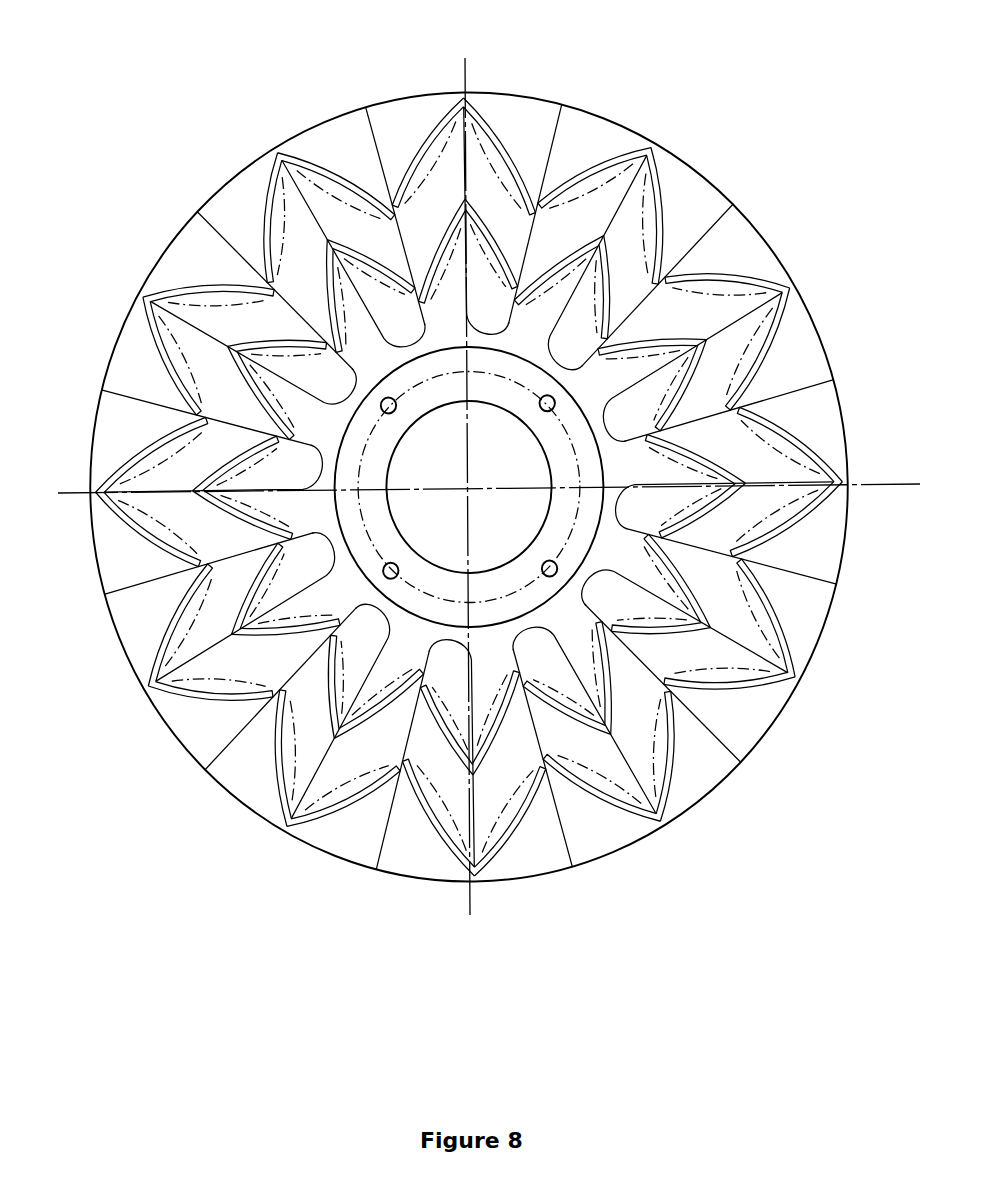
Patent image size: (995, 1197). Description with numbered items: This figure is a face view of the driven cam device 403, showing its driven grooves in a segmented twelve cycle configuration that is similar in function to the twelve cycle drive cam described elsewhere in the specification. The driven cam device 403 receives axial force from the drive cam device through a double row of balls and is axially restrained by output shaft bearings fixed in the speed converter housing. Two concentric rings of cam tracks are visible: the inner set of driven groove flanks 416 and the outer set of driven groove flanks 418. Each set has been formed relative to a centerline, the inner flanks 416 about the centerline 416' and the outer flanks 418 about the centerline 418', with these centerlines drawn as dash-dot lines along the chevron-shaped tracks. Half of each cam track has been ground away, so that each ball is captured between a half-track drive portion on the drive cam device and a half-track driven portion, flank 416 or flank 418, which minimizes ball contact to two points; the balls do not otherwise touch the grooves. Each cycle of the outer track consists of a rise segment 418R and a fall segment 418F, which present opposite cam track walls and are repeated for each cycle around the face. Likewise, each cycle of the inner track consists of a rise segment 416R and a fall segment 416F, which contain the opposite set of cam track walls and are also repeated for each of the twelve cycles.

The driven cam device 403 is at (402, 908).
The inner driven groove flank 416 is at (166, 393).
The centerline of inner driven groove flank 416' is at (560, 159).
The rise portion of inner driven groove flank 416R is at (312, 283).
The fall portion of inner driven groove flank 416F is at (632, 261).
The outer driven groove flank 418 is at (252, 202).
The centerline of outer driven groove flank 418' is at (322, 156).
The rise portion of outer driven groove flank 418R is at (417, 130).
The fall portion of outer driven groove flank 418F is at (666, 184).